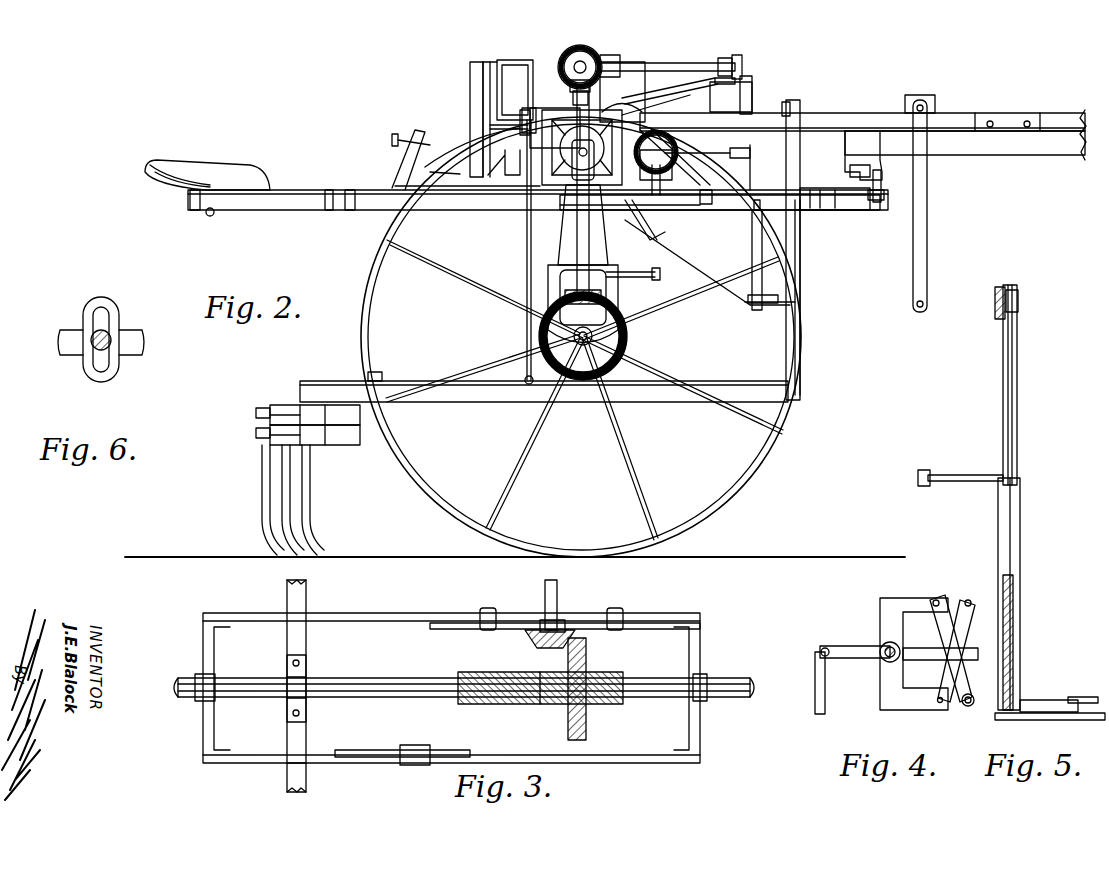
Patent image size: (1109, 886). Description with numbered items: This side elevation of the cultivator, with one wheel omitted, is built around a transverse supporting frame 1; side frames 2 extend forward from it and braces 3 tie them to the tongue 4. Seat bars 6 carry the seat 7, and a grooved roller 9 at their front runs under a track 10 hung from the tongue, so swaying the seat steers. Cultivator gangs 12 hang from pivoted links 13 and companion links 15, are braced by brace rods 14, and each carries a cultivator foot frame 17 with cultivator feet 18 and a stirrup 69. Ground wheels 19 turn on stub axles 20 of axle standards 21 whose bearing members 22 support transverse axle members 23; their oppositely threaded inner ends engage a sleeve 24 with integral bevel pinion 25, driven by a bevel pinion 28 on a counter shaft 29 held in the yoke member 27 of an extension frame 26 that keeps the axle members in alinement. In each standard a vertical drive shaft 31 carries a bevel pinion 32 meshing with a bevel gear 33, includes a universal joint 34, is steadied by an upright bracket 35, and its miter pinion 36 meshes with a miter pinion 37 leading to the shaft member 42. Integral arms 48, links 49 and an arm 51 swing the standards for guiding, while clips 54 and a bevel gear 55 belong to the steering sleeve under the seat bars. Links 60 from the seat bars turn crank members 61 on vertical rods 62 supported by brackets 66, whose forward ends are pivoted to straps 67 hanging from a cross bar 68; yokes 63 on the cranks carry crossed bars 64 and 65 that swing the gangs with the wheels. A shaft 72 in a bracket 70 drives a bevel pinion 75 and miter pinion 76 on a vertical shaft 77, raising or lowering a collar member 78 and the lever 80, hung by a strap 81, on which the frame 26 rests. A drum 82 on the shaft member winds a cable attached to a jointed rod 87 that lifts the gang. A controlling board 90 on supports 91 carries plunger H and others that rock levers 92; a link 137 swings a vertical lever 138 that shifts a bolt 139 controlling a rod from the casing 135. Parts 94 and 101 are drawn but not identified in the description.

In FIG. 2, the transverse supporting frame 1 is at (660, 94).
In FIG. 2, the side frames 2 is at (828, 113).
In FIG. 2, the braces 3 is at (955, 128).
In FIG. 2, the tongue 4 is at (1050, 150).
In FIG. 2, the seat bars 6 is at (368, 212).
In FIG. 2, the seat 7 is at (210, 160).
In FIG. 2, the grooved roller 9 is at (882, 206).
In FIG. 2, the track 10 is at (880, 178).
In FIG. 2, the cultivator gangs 12 is at (490, 405).
In FIG. 2, the pivoted links 13 is at (790, 248).
In FIG. 4, the pivoted links 13 is at (976, 586).
In FIG. 2, the brace rods 14 is at (735, 352).
In FIG. 4, the companion link 15 is at (970, 705).
In FIG. 2, the cultivator foot frame 17 is at (340, 450).
In FIG. 2, the cultivator feet 18 is at (258, 485).
In FIG. 2, the ground wheels 19 is at (801, 412).
In FIG. 2, the stub axles 20 is at (560, 340).
In FIG. 2, the axle standards 21 is at (565, 240).
In FIG. 2, the right angular bearing members 22 is at (570, 160).
In FIG. 3, the transverse axle members 23 is at (395, 678).
In FIG. 3, the sleeve 24 is at (495, 704).
In FIG. 3, the bevel pinion 25 is at (586, 650).
In FIG. 2, the extension frame 26 is at (525, 160).
In FIG. 3, the extension frame 26 is at (400, 613).
In FIG. 6, the yoke member 27 is at (83, 370).
In FIG. 3, the yoke member 27 is at (565, 620).
In FIG. 3, the bevel pinion 28 is at (540, 650).
In FIG. 6, the counter shaft 29 is at (108, 332).
In FIG. 3, the counter shaft 29 is at (557, 585).
In FIG. 2, the vertical drive shaft 31 is at (567, 192).
In FIG. 2, the bevel pinion 32 is at (602, 300).
In FIG. 2, the bevel gear 33 is at (625, 336).
In FIG. 2, the universal joint 34 is at (620, 125).
In FIG. 2, the upright bracket 35 is at (590, 98).
In FIG. 2, the miter pinion 36 is at (643, 62).
In FIG. 2, the miter pinion 37 is at (592, 52).
In FIG. 2, the shaft member 42 is at (618, 55).
In FIG. 2, the arms 48 is at (645, 280).
In FIG. 2, the link 49 is at (660, 222).
In FIG. 2, the arm 51 is at (660, 200).
In FIG. 2, the clips 54 is at (672, 170).
In FIG. 2, the bevel gear 55 is at (680, 128).
In FIG. 2, the links 60 is at (712, 198).
In FIG. 4, the links 60 is at (815, 700).
In FIG. 5, the links 60 is at (918, 478).
In FIG. 2, the crank member 61 is at (750, 262).
In FIG. 4, the crank member 61 is at (855, 660).
In FIG. 5, the crank member 61 is at (1020, 542).
In FIG. 4, the vertical rods 62 is at (880, 645).
In FIG. 5, the vertical rods 62 is at (1017, 400).
In FIG. 4, the yokes 63 is at (915, 598).
In FIG. 5, the yokes 63 is at (1045, 700).
In FIG. 4, the crossed bar 64 is at (960, 665).
In FIG. 5, the crossed bar 64 is at (1085, 697).
In FIG. 4, the crossed bar 65 is at (960, 630).
In FIG. 2, the brackets 66 is at (718, 255).
In FIG. 4, the brackets 66 is at (940, 664).
In FIG. 5, the brackets 66 is at (1060, 720).
In FIG. 2, the straps 67 is at (927, 258).
In FIG. 2, the cross bar 68 is at (935, 100).
In FIG. 2, the stirrups 69 is at (380, 372).
In FIG. 2, the bracket 70 is at (680, 100).
In FIG. 2, the shaft 72 is at (690, 63).
In FIG. 2, the bevel pinion 75 is at (742, 60).
In FIG. 2, the miter pinion 76 is at (735, 80).
In FIG. 2, the vertical shaft 77 is at (745, 100).
In FIG. 2, the collar member 78 is at (752, 152).
In FIG. 2, the lever 80 is at (785, 135).
In FIG. 3, the lever 80 is at (306, 594).
In FIG. 3, the strap 81 is at (306, 680).
In FIG. 2, the drum 82 is at (578, 44).
In FIG. 2, the jointed rod 87 is at (525, 278).
In FIG. 2, the controlling board 90 is at (392, 152).
In FIG. 2, the supports 91 is at (445, 186).
In FIG. 2, the levers 92 is at (487, 124).
In FIG. 2, the rod 94 is at (490, 127).
In FIG. 2, the link 101 is at (495, 150).
In FIG. 2, the casing 135 is at (510, 60).
In FIG. 2, the link 137 is at (455, 168).
In FIG. 2, the vertical lever 138 is at (470, 90).
In FIG. 2, the bolt 139 is at (487, 60).
In FIG. 2, the plunger H is at (400, 140).